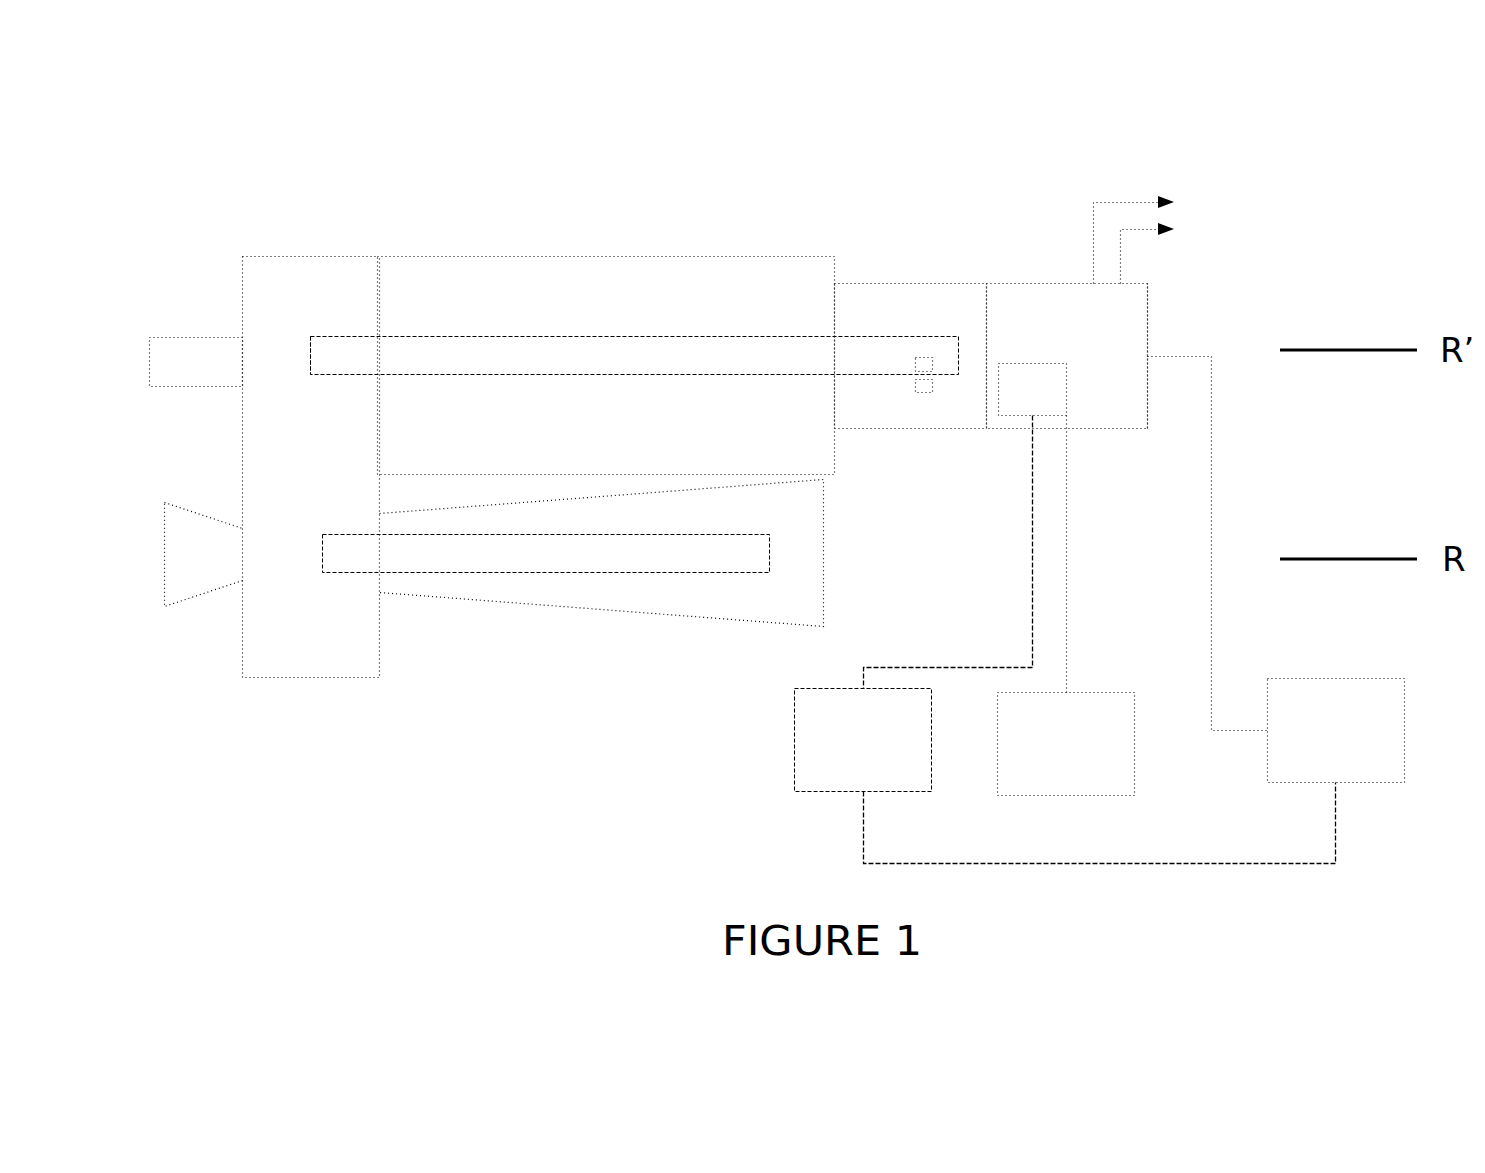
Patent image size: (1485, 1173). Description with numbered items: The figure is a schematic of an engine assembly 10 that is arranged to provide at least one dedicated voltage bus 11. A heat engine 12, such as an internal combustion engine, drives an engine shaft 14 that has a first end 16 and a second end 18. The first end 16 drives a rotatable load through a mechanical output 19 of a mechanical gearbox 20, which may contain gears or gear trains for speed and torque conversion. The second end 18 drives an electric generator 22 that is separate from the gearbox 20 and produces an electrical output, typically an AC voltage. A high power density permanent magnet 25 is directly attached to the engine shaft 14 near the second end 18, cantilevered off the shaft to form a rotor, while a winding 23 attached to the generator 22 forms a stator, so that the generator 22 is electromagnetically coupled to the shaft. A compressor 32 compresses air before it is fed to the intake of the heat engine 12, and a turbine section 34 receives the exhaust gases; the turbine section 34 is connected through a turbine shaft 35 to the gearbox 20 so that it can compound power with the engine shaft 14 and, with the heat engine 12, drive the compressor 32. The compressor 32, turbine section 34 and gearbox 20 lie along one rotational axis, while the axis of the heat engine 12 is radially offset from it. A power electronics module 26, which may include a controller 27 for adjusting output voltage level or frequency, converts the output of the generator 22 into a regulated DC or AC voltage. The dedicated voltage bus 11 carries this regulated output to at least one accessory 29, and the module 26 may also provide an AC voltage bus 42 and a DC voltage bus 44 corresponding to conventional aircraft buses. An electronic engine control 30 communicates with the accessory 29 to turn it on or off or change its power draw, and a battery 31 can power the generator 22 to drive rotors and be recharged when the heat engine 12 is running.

The engine assembly 10 is at (158, 207).
The dedicated voltage bus 11 is at (1211, 410).
The heat engine 12 is at (742, 283).
The engine shaft 14 is at (525, 350).
The first end 16 is at (353, 358).
The second end 18 is at (942, 347).
The mechanical output 19 is at (177, 351).
The mechanical gearbox 20 is at (285, 621).
The electric generator 22 is at (875, 293).
The winding 23 is at (917, 387).
The high power density permanent magnet 25 is at (917, 363).
The power electronics module 26 is at (1128, 334).
The controller 27 is at (1055, 387).
The accessory 29 is at (1362, 728).
The electronic engine control 30 is at (825, 768).
The battery 31 is at (1107, 752).
The compressor 32 is at (178, 551).
The turbine section 34 is at (688, 586).
The turbine shaft 35 is at (563, 553).
The AC voltage bus 42 is at (1115, 202).
The DC voltage bus 44 is at (1142, 229).